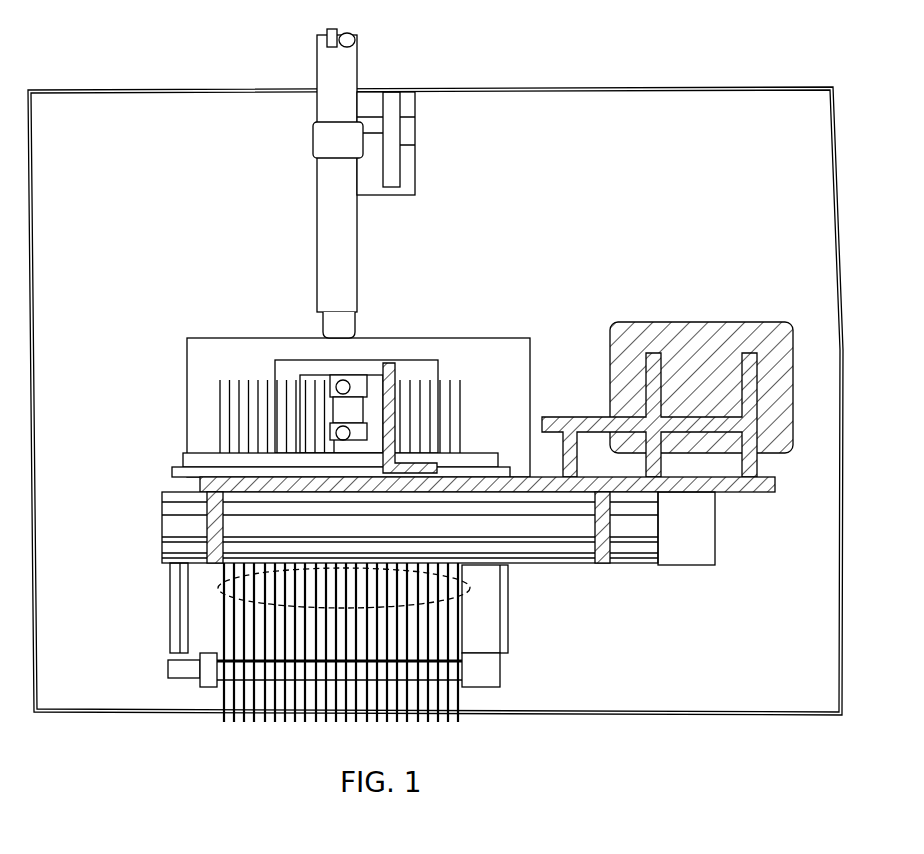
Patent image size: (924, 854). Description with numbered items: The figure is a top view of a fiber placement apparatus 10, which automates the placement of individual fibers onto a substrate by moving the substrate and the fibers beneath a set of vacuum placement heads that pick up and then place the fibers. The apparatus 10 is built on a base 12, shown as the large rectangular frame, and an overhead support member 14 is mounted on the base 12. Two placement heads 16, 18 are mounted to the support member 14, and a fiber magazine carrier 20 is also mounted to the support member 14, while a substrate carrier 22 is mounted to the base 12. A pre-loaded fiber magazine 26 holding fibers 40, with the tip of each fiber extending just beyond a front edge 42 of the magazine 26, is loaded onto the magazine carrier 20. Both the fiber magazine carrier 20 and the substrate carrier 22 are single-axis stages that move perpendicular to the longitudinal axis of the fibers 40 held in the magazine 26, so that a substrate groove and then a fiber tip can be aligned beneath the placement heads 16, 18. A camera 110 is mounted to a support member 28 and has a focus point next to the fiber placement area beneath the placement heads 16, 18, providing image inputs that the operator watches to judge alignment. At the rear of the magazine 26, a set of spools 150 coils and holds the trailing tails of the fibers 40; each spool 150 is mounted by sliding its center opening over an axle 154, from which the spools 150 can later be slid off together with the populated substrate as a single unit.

The fiber placement apparatus 10 is at (875, 123).
The base 12 is at (845, 268).
The overhead support member 14 is at (775, 485).
The placement head 16 is at (362, 390).
The placement head 18 is at (383, 423).
The fiber magazine carrier 20 is at (162, 522).
The substrate carrier 22 is at (187, 348).
The fiber magazine 26 is at (508, 578).
The support member 28 is at (415, 135).
The fibers 40 is at (470, 590).
The front edge 42 is at (205, 453).
The camera 110 is at (317, 58).
The spools 150 is at (222, 698).
The axle 154 is at (168, 668).